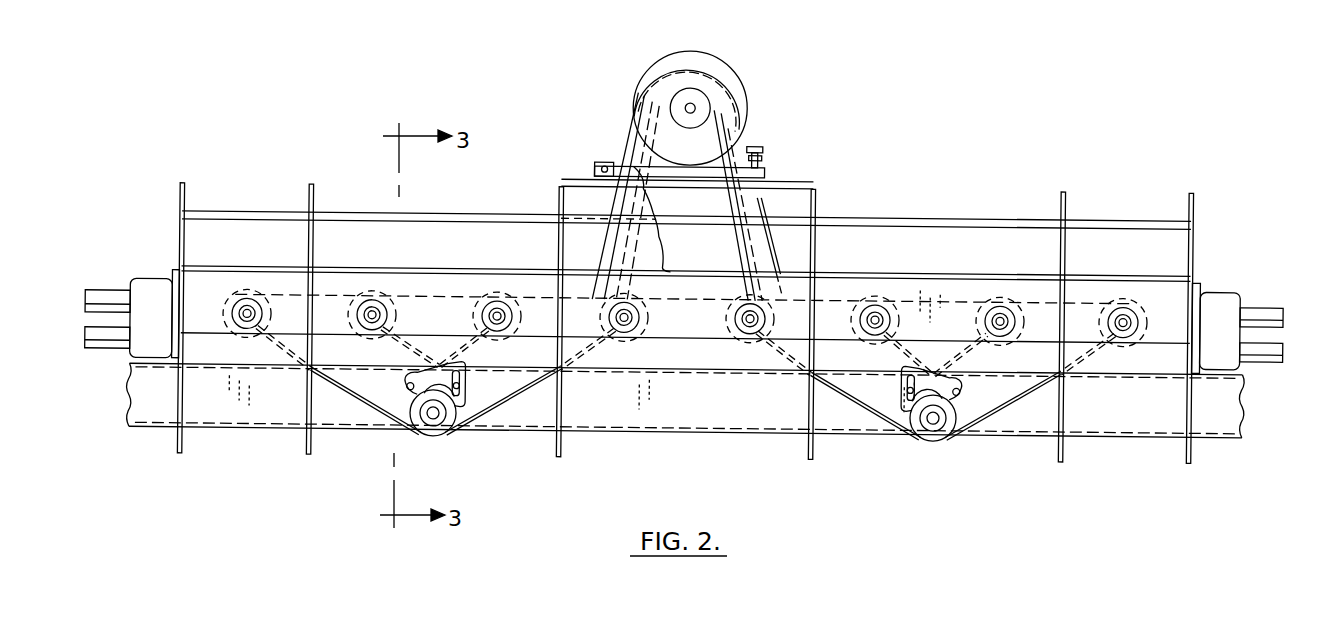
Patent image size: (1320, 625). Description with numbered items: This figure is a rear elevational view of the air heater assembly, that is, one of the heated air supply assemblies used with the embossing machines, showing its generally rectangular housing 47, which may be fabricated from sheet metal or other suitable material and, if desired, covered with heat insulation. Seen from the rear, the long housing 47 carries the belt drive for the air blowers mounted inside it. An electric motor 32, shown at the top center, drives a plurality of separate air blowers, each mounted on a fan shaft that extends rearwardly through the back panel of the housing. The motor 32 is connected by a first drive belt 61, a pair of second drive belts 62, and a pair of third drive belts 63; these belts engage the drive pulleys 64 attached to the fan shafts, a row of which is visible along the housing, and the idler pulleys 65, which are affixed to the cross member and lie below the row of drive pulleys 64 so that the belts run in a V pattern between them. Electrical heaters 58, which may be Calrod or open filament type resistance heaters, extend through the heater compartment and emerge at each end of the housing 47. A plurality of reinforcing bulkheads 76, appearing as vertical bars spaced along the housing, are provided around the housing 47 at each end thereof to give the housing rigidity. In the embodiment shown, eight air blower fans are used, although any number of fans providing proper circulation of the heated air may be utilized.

The electric motor 32 is at (733, 82).
The housing 47 is at (946, 201).
The electrical heaters 58 is at (100, 300).
The first drive belt 61 is at (739, 196).
The second drive belts 62 is at (506, 405).
The third drive belts 63 is at (403, 323).
The drive pulleys 64 is at (380, 278).
The idler pulleys 65 is at (433, 435).
The reinforcing bulkheads 76 is at (184, 198).